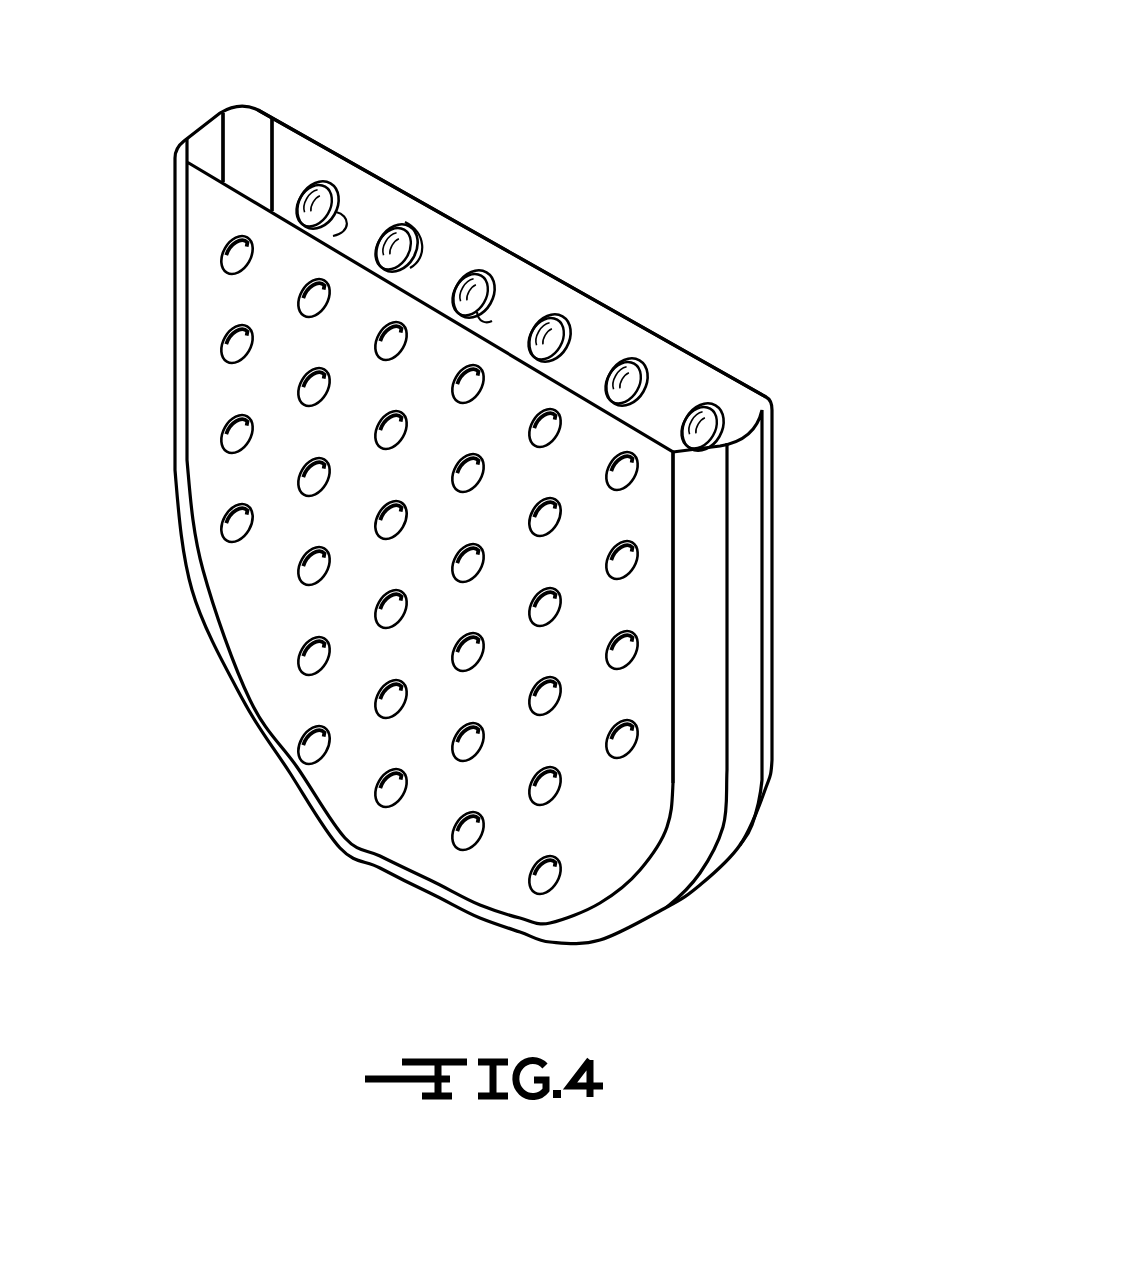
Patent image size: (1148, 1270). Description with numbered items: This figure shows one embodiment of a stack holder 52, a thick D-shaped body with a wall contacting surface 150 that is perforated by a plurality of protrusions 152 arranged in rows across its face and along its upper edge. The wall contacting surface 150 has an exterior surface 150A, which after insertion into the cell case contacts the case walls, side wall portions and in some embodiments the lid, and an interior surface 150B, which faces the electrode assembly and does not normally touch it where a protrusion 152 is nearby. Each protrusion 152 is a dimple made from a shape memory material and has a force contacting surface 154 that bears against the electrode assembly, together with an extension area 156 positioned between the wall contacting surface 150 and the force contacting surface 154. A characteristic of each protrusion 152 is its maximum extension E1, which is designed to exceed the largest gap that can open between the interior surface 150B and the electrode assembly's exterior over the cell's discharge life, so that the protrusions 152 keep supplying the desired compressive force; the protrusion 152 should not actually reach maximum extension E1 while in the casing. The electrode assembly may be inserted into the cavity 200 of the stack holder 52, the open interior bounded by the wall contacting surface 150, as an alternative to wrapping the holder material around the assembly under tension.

The stack holder 52 is at (653, 253).
The wall contacting surface 150 is at (452, 215).
The exterior surface 150A is at (657, 507).
The interior surface 150B is at (682, 372).
The protrusions 152 is at (632, 366).
The force contacting surface 154 is at (477, 312).
The extension area 156 is at (414, 235).
The cavity 200 is at (249, 140).
The maximum extension E1 is at (350, 230).